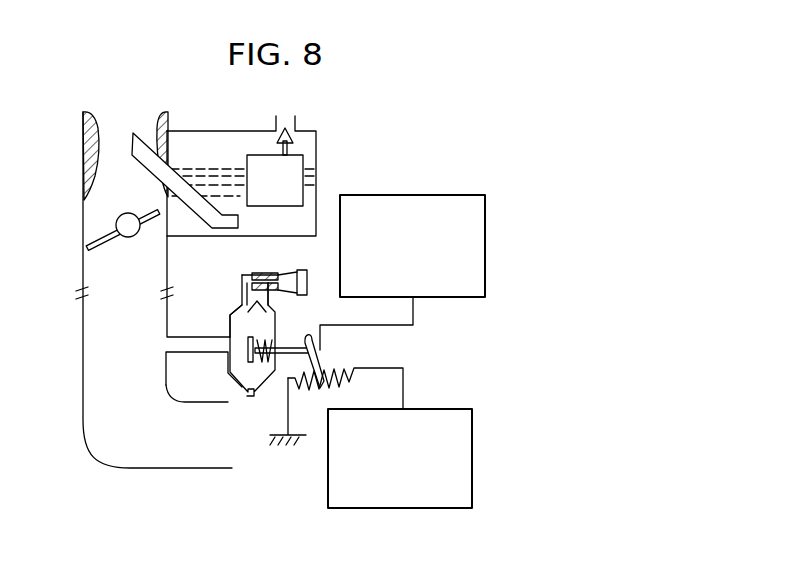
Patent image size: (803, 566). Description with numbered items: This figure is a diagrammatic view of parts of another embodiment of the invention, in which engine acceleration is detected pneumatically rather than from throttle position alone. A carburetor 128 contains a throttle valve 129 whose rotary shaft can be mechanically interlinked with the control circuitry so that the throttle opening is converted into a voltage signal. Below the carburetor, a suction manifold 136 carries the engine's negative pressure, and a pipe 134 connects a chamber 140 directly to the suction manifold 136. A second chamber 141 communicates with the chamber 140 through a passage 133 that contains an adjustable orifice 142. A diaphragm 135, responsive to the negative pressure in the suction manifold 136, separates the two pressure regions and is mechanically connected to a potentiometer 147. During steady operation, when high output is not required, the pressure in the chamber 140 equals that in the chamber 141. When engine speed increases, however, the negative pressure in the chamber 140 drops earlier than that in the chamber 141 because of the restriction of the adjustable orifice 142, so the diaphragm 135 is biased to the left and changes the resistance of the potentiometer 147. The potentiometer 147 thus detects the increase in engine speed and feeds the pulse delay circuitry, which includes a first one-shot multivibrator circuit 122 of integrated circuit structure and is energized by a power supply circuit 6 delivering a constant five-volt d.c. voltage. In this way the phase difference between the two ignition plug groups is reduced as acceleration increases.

The carburetor 128 is at (83, 219).
The throttle valve 129 is at (88, 249).
The suction manifold 136 is at (84, 353).
The pipe 134 is at (196, 341).
The chamber 140 is at (240, 367).
The diaphragm 135 is at (247, 375).
The passage 133 is at (253, 277).
The adjustable orifice 142 is at (268, 284).
The chamber 141 is at (268, 335).
The potentiometer 147 is at (352, 372).
The power supply circuit 6 is at (497, 240).
The first one-shot multivibrator circuit 122 is at (472, 447).